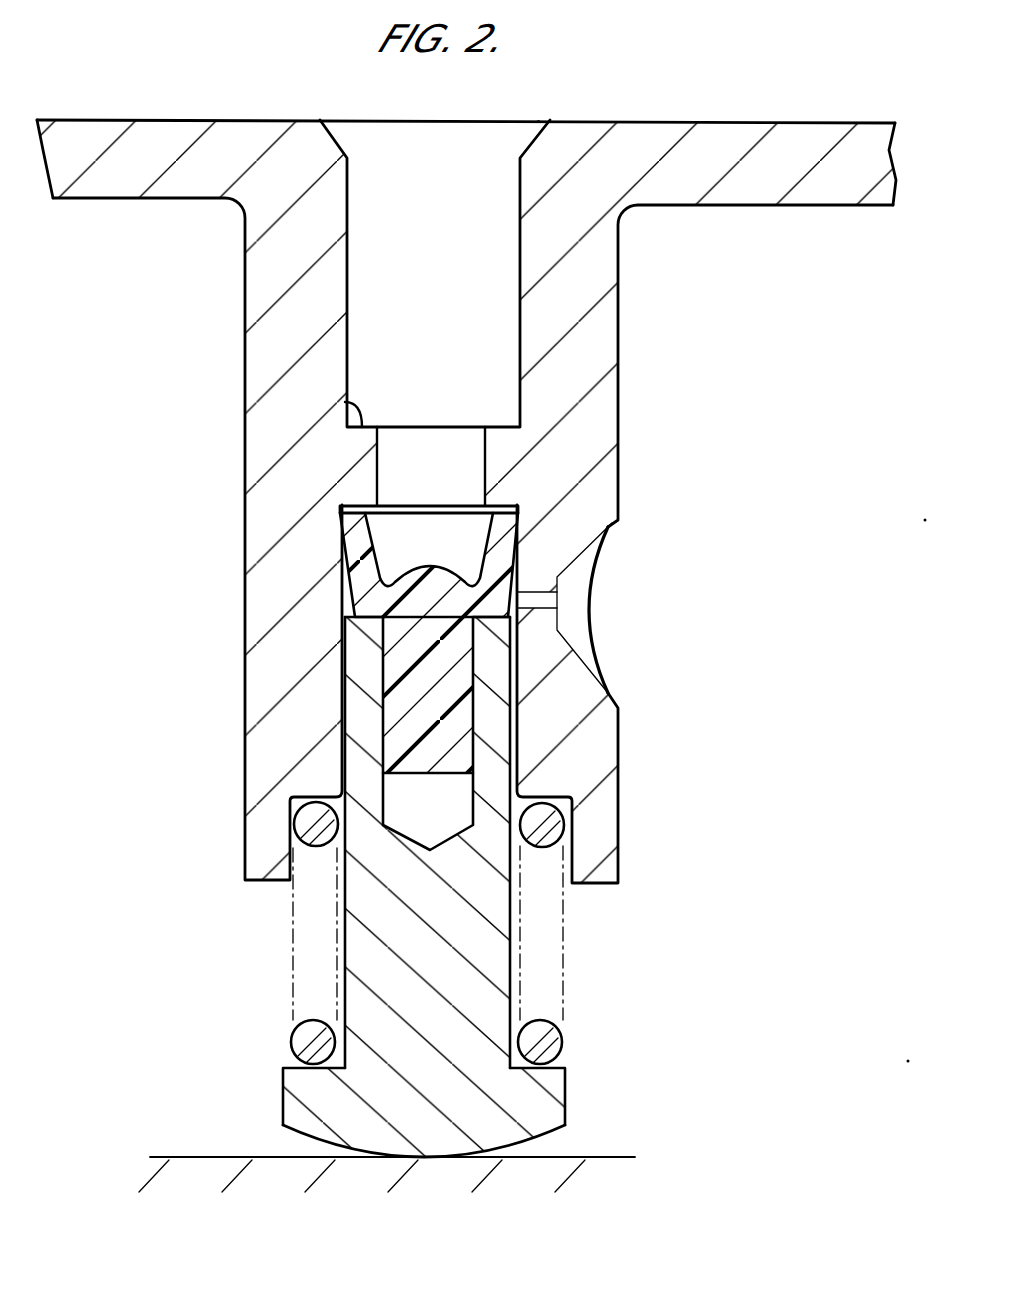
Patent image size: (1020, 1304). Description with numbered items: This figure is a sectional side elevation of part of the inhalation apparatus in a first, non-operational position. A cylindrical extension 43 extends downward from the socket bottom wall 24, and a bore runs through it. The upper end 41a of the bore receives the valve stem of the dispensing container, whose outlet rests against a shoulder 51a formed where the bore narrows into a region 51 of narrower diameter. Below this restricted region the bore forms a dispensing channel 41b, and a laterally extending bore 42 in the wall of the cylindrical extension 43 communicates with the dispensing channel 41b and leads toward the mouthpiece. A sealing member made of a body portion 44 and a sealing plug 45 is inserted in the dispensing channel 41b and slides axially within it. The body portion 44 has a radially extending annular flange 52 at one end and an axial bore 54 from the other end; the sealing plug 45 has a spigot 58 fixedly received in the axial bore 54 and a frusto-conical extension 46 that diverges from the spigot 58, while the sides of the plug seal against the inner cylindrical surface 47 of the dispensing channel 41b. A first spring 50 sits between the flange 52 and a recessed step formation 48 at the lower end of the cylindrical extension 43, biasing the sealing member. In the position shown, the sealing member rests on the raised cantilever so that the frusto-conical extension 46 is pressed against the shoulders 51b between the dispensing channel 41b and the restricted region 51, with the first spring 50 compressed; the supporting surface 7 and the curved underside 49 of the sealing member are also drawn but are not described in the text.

The surface 7 is at (632, 1157).
The socket bottom wall 24 is at (100, 187).
The upper end of the bore 41a is at (495, 300).
The dispensing channel 41b is at (510, 606).
The laterally extending bore 42 is at (548, 598).
The cylindrical extension 43 is at (604, 404).
The body portion 44 is at (473, 988).
The sealing plug 45 is at (420, 572).
The frusto-conical extension 46 is at (343, 547).
The inner cylindrical surface 47 is at (343, 612).
The recessed step formation 48 is at (297, 797).
The curved bottom face 49 is at (540, 1143).
The first spring 50 is at (545, 1048).
The region of narrower diameter 51 is at (495, 470).
The shoulder 51a is at (360, 425).
The shoulders 51b is at (345, 520).
The radially extending annular flange 52 is at (292, 1100).
The axial bore 54 is at (407, 797).
The spigot 58 is at (445, 700).